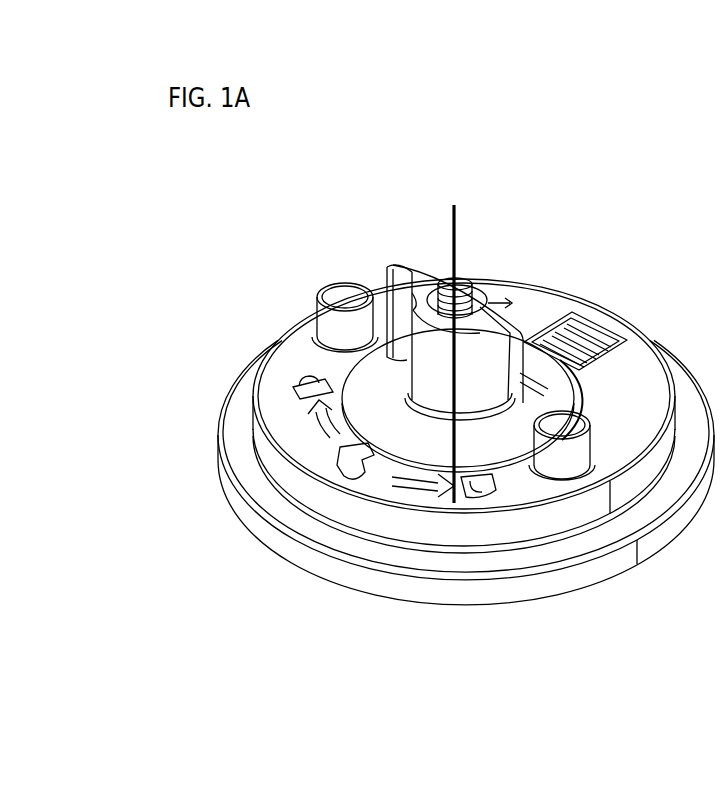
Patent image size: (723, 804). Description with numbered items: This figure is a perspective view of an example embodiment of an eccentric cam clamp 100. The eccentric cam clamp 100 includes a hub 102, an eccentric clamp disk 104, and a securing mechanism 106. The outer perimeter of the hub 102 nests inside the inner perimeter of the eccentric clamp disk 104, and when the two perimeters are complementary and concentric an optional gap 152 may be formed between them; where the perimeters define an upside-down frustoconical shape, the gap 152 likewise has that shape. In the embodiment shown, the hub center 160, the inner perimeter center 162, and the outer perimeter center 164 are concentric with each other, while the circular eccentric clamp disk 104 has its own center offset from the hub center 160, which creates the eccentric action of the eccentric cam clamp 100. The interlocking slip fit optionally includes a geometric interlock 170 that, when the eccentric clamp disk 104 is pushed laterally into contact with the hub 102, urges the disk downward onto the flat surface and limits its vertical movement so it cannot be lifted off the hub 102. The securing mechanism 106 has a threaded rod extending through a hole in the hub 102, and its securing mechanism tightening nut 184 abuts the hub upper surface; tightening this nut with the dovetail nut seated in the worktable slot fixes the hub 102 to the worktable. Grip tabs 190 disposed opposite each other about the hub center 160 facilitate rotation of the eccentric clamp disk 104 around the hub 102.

The eccentric cam clamp 100 is at (183, 278).
The hub 102 is at (490, 448).
The eccentric clamp disk 104 is at (488, 592).
The securing mechanism 106 is at (397, 255).
The gap 152 is at (386, 462).
The hub center 160 is at (458, 225).
The inner perimeter center 162 is at (504, 339).
The outer perimeter center 164 is at (504, 354).
The geometric interlock 170 is at (576, 396).
The securing mechanism tightening nut 184 is at (395, 277).
The grip tabs 190 is at (328, 320).